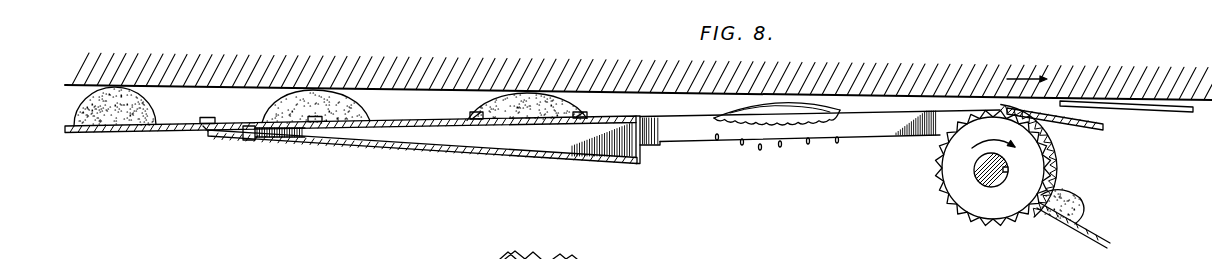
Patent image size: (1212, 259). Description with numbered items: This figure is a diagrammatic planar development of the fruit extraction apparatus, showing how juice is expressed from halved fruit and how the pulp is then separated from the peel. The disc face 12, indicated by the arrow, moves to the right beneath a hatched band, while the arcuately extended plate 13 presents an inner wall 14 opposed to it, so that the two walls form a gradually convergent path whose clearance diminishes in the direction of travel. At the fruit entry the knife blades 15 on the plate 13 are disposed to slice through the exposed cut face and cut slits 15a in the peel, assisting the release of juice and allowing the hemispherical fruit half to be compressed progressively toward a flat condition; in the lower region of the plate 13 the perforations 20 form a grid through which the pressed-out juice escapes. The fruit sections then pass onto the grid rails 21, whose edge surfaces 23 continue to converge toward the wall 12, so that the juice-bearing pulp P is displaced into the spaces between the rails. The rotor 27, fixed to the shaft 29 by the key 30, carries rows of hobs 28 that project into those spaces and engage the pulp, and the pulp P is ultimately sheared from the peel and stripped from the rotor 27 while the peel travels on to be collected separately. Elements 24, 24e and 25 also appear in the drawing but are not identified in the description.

The disc face 12 is at (450, 91).
The arcuately extended plate 13 is at (204, 135).
The inner wall 14 is at (233, 125).
The knife blades 15 is at (208, 117).
The slits 15a is at (483, 115).
The perforations 20 is at (562, 122).
The grid rails 21 is at (868, 131).
The edge surfaces 23 is at (680, 110).
The element 24 is at (419, 258).
The element 24e is at (567, 257).
The guide strip 25 is at (1107, 123).
The rotor 27 is at (959, 207).
The hobs 28 is at (932, 178).
The shaft 29 is at (987, 183).
The key 30 is at (1010, 170).
The juice-bearing pulp P is at (770, 111).